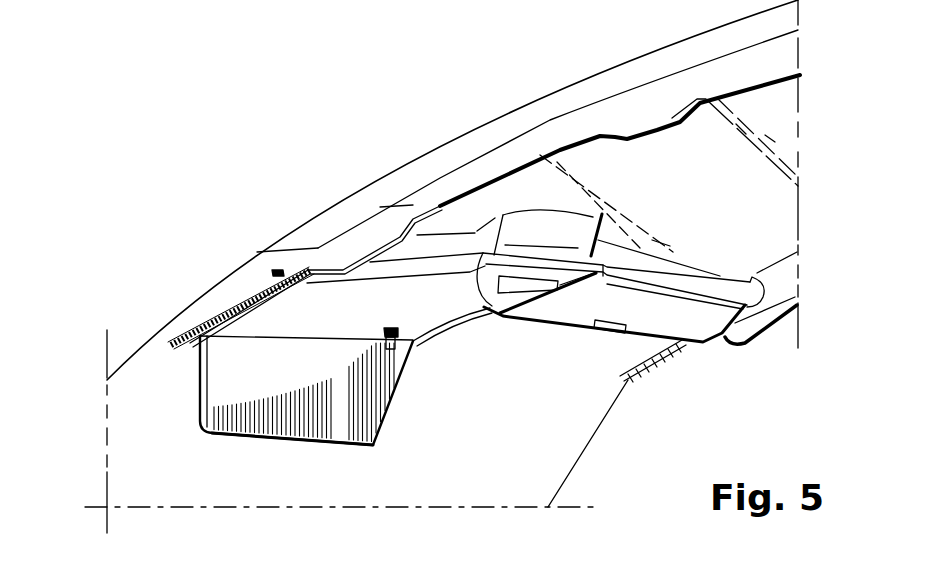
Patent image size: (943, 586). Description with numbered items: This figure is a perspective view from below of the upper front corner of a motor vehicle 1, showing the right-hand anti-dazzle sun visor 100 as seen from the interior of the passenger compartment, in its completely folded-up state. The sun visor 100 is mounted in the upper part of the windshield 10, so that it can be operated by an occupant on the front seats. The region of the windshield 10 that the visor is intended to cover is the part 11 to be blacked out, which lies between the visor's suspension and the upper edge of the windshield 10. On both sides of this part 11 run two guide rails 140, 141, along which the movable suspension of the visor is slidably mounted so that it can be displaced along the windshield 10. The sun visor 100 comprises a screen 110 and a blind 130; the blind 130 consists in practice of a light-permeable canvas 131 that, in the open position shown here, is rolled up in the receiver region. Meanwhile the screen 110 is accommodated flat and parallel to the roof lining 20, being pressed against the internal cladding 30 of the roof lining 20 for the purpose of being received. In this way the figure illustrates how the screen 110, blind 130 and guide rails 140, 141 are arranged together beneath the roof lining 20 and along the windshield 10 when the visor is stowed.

The motor vehicle 1 is at (275, 203).
The windshield 10 is at (510, 461).
The part to be blacked out 11 is at (534, 346).
The roof lining 20 is at (493, 134).
The internal cladding 30 is at (682, 183).
The anti-dazzle sun visor 100 is at (636, 326).
The screen 110 is at (252, 458).
The blind 130 is at (280, 333).
The canvas 131 is at (333, 313).
The guide rail 140 is at (435, 326).
The guide rail 141 is at (213, 313).